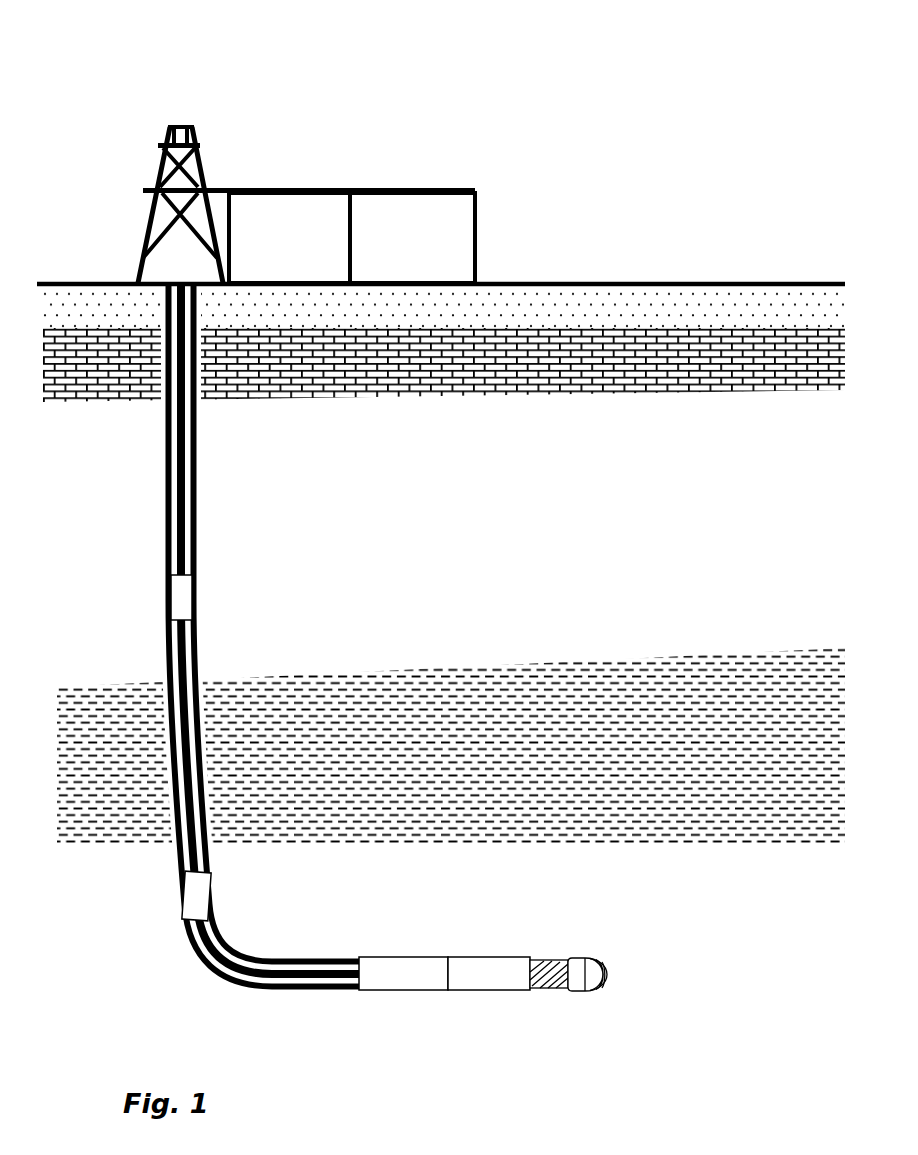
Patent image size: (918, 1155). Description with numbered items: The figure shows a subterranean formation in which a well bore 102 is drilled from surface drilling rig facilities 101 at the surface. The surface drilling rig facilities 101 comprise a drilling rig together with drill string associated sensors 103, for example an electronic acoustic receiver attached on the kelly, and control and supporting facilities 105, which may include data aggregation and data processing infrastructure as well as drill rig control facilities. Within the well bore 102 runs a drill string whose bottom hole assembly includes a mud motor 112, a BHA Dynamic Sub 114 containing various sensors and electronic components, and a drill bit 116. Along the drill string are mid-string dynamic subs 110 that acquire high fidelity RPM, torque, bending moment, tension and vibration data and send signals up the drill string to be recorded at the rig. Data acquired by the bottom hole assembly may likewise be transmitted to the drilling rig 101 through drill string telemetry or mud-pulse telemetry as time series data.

The surface drilling rig facilities 101 is at (306, 147).
The well bore 102 is at (197, 490).
The drill string associated sensors 103 is at (289, 238).
The control and supporting facilities 105 is at (412, 238).
The mid-string dynamic subs 110 is at (197, 597).
The mud motor 112 is at (405, 957).
The BHA Dynamic Sub 114 is at (488, 957).
The drill bit 116 is at (585, 957).